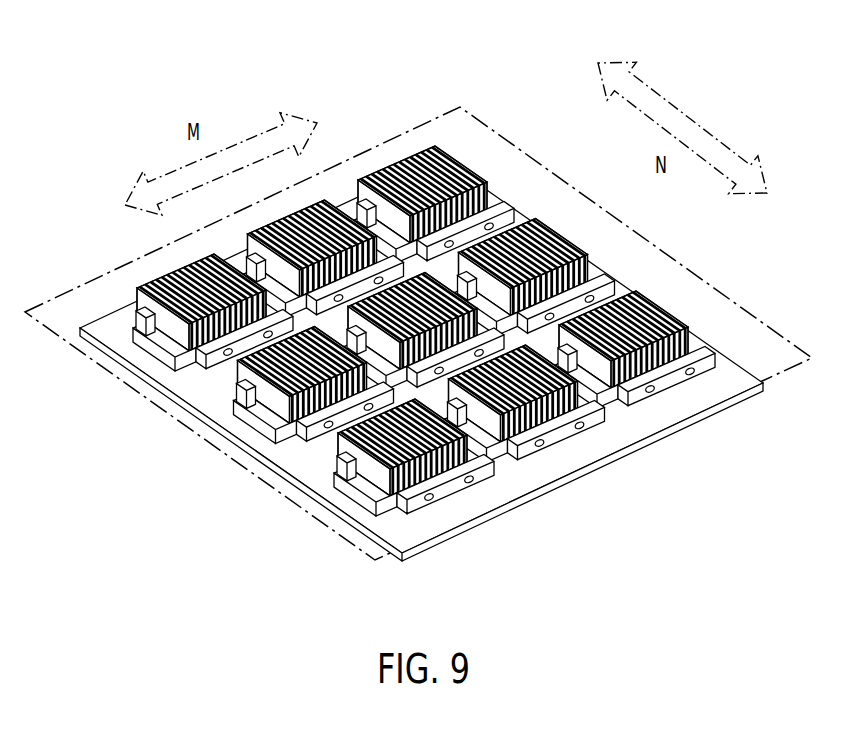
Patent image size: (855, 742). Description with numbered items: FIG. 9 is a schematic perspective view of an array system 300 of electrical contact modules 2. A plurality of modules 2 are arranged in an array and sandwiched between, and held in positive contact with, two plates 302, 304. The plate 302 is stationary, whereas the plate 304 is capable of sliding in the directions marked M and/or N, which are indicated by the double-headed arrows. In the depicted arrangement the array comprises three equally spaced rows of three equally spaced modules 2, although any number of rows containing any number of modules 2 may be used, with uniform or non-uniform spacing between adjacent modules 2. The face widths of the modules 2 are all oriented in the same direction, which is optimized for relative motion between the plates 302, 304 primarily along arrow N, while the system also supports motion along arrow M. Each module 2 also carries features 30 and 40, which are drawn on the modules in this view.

The lighting module array assembly 300 is at (149, 113).
The electrical contact module 2 is at (437, 148).
The mounting block of module base 30 is at (236, 387).
The mounting bar with holes 40 is at (499, 207).
The stationary plate 302 is at (523, 508).
The sliding plate 304 is at (750, 311).